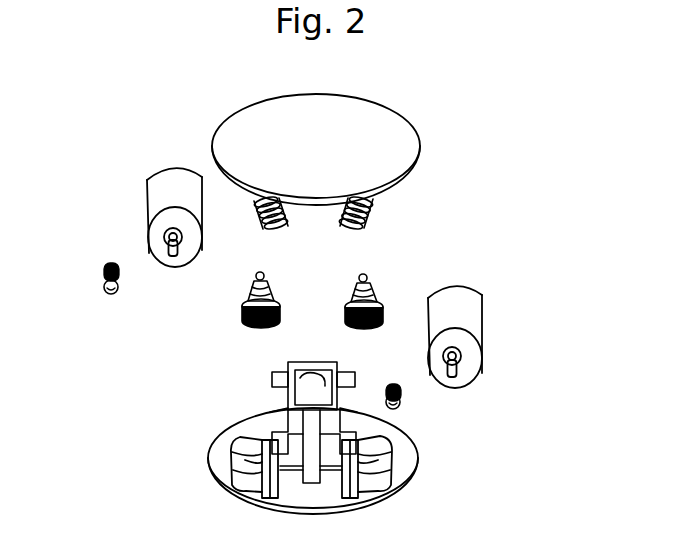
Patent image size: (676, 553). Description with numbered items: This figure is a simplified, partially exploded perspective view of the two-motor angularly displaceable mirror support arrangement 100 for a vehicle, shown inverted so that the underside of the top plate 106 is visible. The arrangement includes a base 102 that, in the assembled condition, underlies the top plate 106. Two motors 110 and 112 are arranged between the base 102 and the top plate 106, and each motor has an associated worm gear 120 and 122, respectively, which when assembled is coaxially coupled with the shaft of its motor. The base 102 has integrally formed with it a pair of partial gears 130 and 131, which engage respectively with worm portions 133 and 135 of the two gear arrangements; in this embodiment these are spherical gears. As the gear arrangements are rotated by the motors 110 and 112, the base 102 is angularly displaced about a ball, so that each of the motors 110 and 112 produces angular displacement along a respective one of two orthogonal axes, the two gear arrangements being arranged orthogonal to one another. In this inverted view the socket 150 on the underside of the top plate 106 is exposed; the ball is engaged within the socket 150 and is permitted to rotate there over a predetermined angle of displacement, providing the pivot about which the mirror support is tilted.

The angularly displaceable mirror support arrangement 100 is at (482, 500).
The base 102 is at (398, 132).
The top plate 106 is at (255, 418).
The motor 110 is at (462, 300).
The motor 112 is at (170, 186).
The worm gear 120 is at (403, 396).
The worm gear 122 is at (122, 278).
The partial gear 130 is at (370, 212).
The partial gear 131 is at (272, 228).
The worm portion 133 is at (374, 284).
The worm portion 135 is at (272, 286).
The socket 150 is at (330, 362).